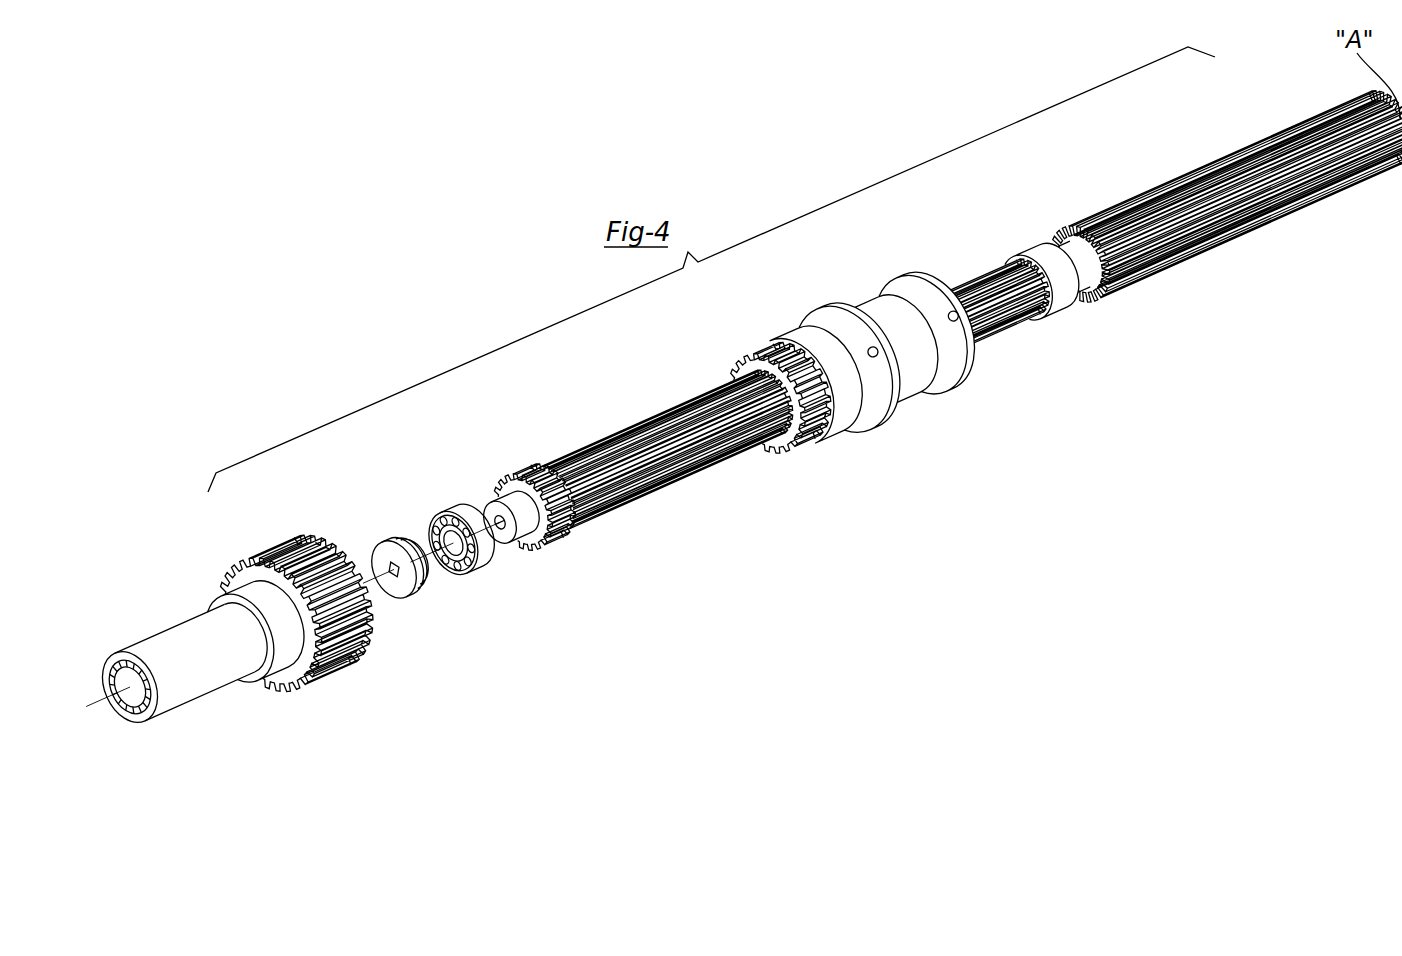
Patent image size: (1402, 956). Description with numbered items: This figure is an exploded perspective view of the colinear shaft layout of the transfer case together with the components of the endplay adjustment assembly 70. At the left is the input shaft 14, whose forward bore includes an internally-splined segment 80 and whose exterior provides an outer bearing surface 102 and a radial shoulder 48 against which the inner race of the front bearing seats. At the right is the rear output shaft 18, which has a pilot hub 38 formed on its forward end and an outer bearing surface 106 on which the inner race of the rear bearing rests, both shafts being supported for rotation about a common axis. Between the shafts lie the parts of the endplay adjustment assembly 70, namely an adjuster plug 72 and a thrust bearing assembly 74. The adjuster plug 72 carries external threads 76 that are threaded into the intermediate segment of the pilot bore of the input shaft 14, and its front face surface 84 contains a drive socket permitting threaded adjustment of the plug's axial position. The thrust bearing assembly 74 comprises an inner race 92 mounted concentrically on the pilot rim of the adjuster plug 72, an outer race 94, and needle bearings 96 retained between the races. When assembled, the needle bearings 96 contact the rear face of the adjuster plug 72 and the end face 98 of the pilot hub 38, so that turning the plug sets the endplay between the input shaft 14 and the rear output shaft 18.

The input shaft 14 is at (190, 697).
The rear output shaft 18 is at (965, 308).
The pilot hub 38 is at (525, 500).
The radial shoulder 48 is at (222, 603).
The endplay adjustment assembly 70 is at (478, 583).
The adjuster plug 72 is at (383, 571).
The thrust bearing assembly 74 is at (488, 571).
The external threads 76 is at (425, 554).
The internally-splined segment 80 is at (130, 705).
The front face surface 84 is at (383, 548).
The inner race 92 is at (454, 546).
The outer race 94 is at (462, 568).
The needle bearings 96 is at (460, 521).
The end face 98 is at (505, 545).
The outer bearing surface 102 is at (252, 662).
The outer bearing surface 106 is at (1038, 262).